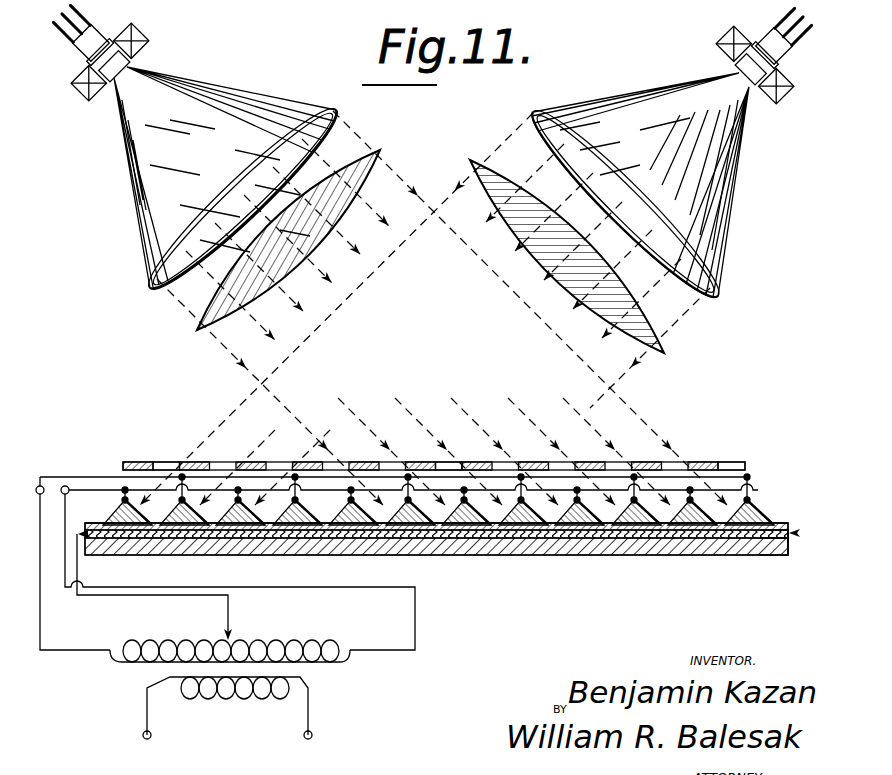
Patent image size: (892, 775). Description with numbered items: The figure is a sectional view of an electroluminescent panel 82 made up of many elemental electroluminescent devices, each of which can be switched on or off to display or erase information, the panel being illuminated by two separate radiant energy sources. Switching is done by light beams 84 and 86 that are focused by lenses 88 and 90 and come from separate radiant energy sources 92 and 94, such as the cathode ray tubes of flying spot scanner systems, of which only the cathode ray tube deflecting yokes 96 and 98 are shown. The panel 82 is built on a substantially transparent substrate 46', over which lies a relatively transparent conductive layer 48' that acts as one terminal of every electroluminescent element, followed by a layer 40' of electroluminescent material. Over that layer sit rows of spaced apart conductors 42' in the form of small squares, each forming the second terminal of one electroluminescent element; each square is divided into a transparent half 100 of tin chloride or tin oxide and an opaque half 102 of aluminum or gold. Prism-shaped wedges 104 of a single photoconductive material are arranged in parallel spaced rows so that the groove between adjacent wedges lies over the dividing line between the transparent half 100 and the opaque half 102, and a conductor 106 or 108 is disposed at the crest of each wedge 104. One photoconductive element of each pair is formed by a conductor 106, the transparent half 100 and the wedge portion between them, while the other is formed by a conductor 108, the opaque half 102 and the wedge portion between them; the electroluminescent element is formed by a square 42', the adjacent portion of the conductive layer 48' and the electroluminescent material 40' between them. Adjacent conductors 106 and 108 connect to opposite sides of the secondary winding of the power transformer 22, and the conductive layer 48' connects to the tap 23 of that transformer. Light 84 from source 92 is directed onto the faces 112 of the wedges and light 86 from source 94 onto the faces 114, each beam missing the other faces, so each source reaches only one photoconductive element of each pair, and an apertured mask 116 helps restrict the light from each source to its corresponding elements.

The power transformer 22 is at (315, 678).
The tap 23 is at (228, 610).
The layer of electroluminescent material 40' is at (444, 520).
The spaced apart conductors 42' is at (425, 550).
The substantially transparent substrate 46' is at (770, 582).
The relatively transparent conductive layer 48' is at (788, 563).
The electroluminescent panel 82 is at (818, 530).
The light beam 84 is at (650, 436).
The light beam 86 is at (494, 216).
The lens 88 is at (197, 330).
The lens 90 is at (664, 353).
The radiant energy source 92 is at (272, 100).
The radiant energy source 94 is at (636, 108).
The cathode ray tube deflecting yoke 96 is at (148, 40).
The cathode ray tube deflecting yoke 98 is at (715, 44).
The transparent half 100 is at (410, 545).
The opaque half 102 is at (440, 540).
The prism-shaped wedges 104 is at (225, 545).
The conductor 106 is at (380, 462).
The conductor 108 is at (420, 463).
The wedge face 112 is at (280, 507).
The wedge face 114 is at (760, 522).
The apertured mask 116 is at (747, 465).